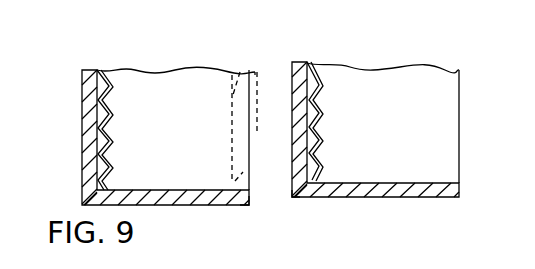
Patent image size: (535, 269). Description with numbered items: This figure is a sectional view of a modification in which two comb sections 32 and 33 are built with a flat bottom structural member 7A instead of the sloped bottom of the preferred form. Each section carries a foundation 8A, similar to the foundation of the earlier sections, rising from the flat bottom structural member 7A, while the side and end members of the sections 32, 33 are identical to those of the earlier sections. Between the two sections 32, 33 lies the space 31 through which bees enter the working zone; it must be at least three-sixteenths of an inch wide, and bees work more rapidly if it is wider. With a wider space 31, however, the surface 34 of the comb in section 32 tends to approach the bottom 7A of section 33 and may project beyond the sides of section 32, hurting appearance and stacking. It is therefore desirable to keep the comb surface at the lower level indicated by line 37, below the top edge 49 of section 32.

The section 32 is at (82, 93).
The section 33 is at (305, 63).
The flat bottom structural member 7A is at (88, 145).
The foundation 8A is at (111, 108).
The line 37 is at (233, 64).
The surface of the comb 34 is at (250, 168).
The edge 49 is at (250, 195).
The space 31 is at (277, 188).